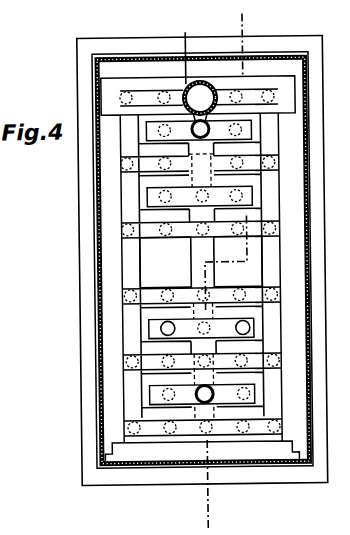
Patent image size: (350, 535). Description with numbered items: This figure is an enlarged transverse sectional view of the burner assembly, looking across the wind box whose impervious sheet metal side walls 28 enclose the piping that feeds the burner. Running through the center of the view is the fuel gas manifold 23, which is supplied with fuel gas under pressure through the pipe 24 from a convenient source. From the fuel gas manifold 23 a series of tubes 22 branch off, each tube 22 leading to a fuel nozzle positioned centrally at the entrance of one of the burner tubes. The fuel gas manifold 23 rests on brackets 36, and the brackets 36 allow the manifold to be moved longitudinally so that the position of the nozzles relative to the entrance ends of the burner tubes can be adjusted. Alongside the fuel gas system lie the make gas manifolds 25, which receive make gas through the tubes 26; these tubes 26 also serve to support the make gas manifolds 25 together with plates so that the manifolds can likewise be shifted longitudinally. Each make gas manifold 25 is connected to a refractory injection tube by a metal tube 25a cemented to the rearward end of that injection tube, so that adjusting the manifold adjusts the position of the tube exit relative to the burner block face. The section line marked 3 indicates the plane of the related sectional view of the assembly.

The fastening bolts 22 is at (158, 95).
The heating element section 23 is at (194, 252).
The inlet pipe 24 is at (142, 44).
The heating elements 25 is at (190, 174).
The connecting fittings 25a is at (159, 389).
The pipe connections 26 is at (210, 127).
The casing wall 28 is at (127, 463).
The supporting bracket 36 is at (293, 124).
The section line 3- 3 is at (240, 513).